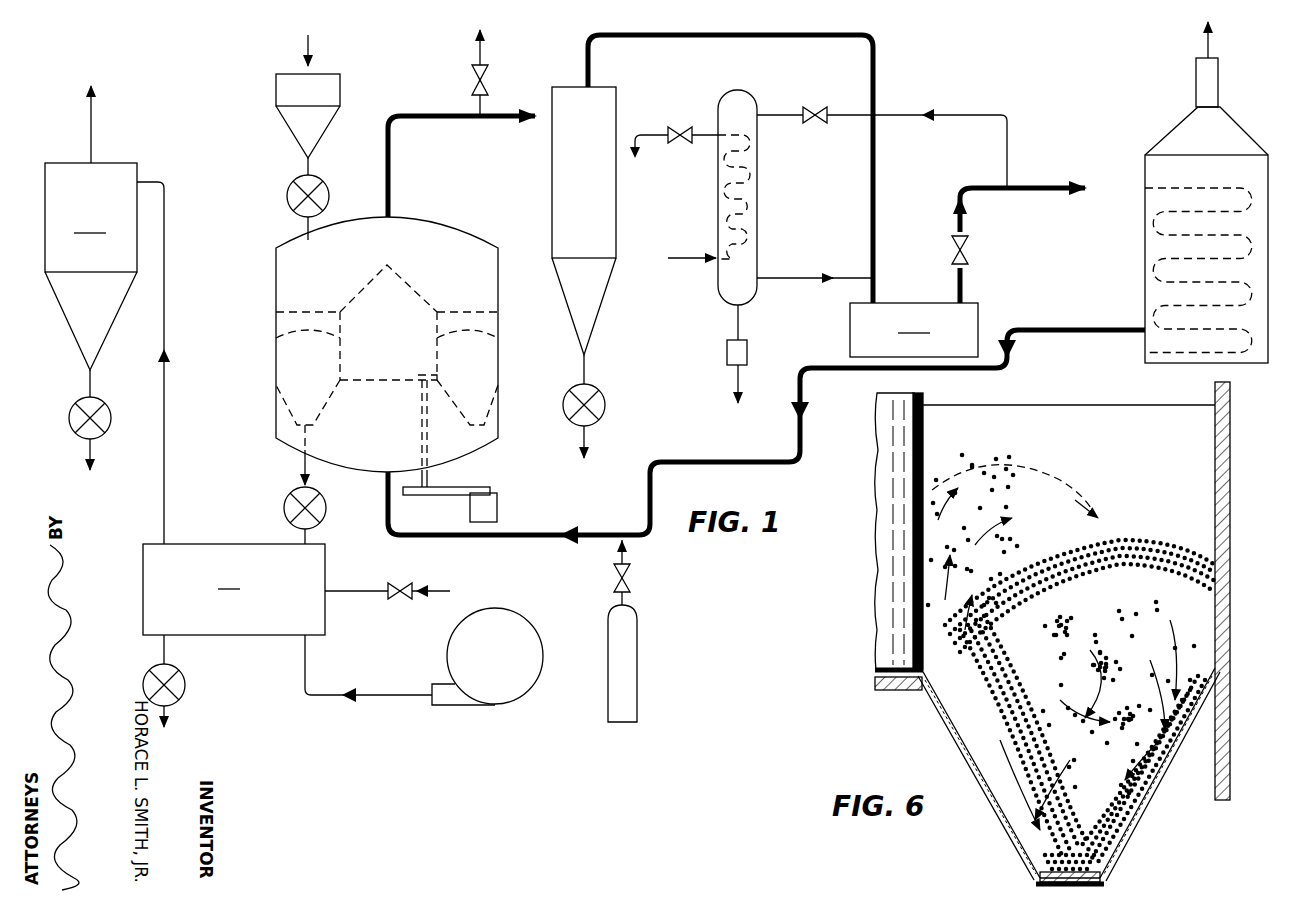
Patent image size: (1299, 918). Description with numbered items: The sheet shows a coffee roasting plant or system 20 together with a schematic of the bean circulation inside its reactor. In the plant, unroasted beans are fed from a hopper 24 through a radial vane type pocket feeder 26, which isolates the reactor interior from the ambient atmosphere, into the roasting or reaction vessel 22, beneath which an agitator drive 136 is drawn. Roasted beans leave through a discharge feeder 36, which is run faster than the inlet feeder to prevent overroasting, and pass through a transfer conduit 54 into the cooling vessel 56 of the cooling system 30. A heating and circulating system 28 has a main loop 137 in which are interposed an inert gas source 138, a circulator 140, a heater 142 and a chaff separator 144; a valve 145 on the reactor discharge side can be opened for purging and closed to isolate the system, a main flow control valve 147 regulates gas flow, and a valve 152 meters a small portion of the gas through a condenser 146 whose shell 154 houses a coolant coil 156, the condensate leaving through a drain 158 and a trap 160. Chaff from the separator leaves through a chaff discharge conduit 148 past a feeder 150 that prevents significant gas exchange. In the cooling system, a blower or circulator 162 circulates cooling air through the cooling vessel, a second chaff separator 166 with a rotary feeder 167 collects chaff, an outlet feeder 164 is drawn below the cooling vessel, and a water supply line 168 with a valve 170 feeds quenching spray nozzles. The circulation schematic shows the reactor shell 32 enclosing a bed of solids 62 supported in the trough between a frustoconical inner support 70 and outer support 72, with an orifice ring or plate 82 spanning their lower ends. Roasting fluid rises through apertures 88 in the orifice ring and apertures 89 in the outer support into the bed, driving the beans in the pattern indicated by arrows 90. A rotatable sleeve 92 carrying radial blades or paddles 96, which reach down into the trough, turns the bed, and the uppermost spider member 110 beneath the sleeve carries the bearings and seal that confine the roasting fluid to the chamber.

In FIG. 1, the coffee roasting plant or system 20 is at (203, 80).
In FIG. 1, the roasting or reaction vessel 22 is at (272, 260).
In FIG. 1, the hopper 24 is at (273, 86).
In FIG. 1, the radial vane type pocket feeder 26 is at (286, 192).
In FIG. 1, the roasting gas heating and circulating system 28 is at (742, 460).
In FIG. 1, the cooling system 30 is at (232, 538).
In FIG. 6, the reactor shell 32 is at (1231, 754).
In FIG. 1, the discharge feeder 36 is at (290, 498).
In FIG. 1, the transfer conduit 54 is at (312, 539).
In FIG. 1, the cooling vessel 56 is at (234, 589).
In FIG. 6, the bed of solids 62 is at (975, 608).
In FIG. 6, the inner support 70 is at (975, 770).
In FIG. 6, the outer support 72 is at (1150, 800).
In FIG. 6, the orifice ring or plate 82 is at (1090, 882).
In FIG. 6, the apertures 88 is at (1050, 880).
In FIG. 6, the apertures 89 is at (1155, 781).
In FIG. 6, the arrows 90 is at (1140, 562).
In FIG. 6, the inner member or sleeve 92 is at (913, 437).
In FIG. 6, the radial blades or paddles 96 is at (1070, 405).
In FIG. 6, the uppermost spider member 110 is at (893, 692).
In FIG. 1, the agitator motor 136 is at (498, 500).
In FIG. 1, the main loop 137 is at (585, 45).
In FIG. 1, the inert gas source 138 is at (644, 620).
In FIG. 1, the circulator 140 is at (914, 330).
In FIG. 1, the heater 142 is at (1142, 245).
In FIG. 1, the chaff separator 144 is at (548, 178).
In FIG. 1, the valve 145 is at (472, 72).
In FIG. 1, the condenser 146 is at (762, 222).
In FIG. 1, the main flow control valve 147 is at (955, 242).
In FIG. 1, the chaff discharge conduit 148 is at (588, 372).
In FIG. 1, the feeder 150 is at (607, 403).
In FIG. 1, the valve 152 is at (825, 105).
In FIG. 1, the shell 154 is at (728, 93).
In FIG. 1, the coil 156 is at (720, 200).
In FIG. 1, the drain 158 is at (742, 323).
In FIG. 1, the trap 160 is at (727, 345).
In FIG. 1, the blower or circulator 162 is at (505, 622).
In FIG. 1, the receiver valve 164 is at (185, 675).
In FIG. 1, the chaff separator 166 is at (107, 315).
In FIG. 1, the rotary feeder 167 is at (76, 406).
In FIG. 1, the water supply line 168 is at (352, 591).
In FIG. 1, the valve 170 is at (394, 600).